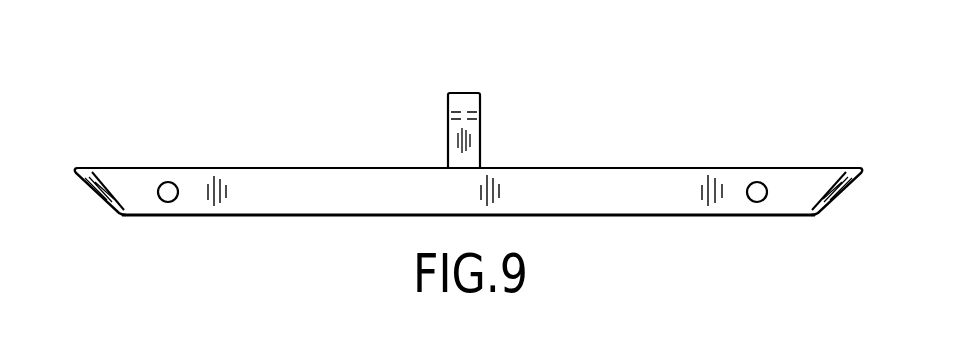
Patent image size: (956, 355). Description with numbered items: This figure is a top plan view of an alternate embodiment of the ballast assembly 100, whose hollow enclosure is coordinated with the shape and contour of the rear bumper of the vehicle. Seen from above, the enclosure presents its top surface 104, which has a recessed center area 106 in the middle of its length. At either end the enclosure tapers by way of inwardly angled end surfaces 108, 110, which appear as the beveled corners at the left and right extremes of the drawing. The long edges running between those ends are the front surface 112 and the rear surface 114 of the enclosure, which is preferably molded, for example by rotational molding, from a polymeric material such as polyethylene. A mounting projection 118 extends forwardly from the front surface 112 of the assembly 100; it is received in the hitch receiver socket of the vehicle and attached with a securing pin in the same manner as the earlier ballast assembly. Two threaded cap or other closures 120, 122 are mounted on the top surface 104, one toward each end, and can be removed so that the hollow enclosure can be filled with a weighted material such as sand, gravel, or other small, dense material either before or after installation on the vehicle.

The ballast assembly 100 is at (652, 128).
The top surface 104 is at (808, 183).
The recessed center area 106 is at (542, 185).
The inwardly angled end surface 108 is at (93, 196).
The inwardly angled end surface 110 is at (840, 196).
The front surface 112 is at (231, 178).
The rear surface 114 is at (230, 215).
The mounting projection 118 is at (448, 138).
The threaded cap closure 120 is at (169, 182).
The threaded cap closure 122 is at (745, 183).